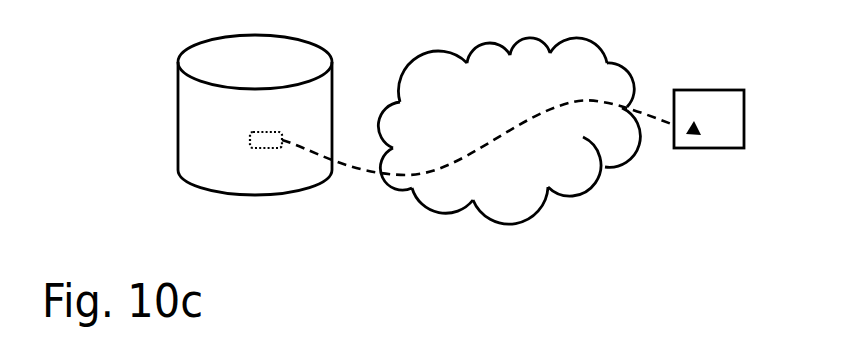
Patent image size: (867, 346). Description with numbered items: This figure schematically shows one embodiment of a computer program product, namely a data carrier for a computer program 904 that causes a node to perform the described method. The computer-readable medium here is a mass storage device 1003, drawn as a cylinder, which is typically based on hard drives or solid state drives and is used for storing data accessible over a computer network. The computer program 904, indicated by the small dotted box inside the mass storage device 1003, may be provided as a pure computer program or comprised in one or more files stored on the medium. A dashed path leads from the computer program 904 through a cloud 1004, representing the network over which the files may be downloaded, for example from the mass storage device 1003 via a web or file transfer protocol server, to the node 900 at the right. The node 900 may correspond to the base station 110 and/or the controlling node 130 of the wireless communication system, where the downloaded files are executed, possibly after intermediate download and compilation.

The mass storage device 1003 is at (178, 114).
The computer program 904 is at (262, 149).
The network (cloud) 1004 is at (437, 210).
The node 900 is at (723, 147).
The base station 110 is at (723, 147).
The controlling node 130 is at (693, 148).